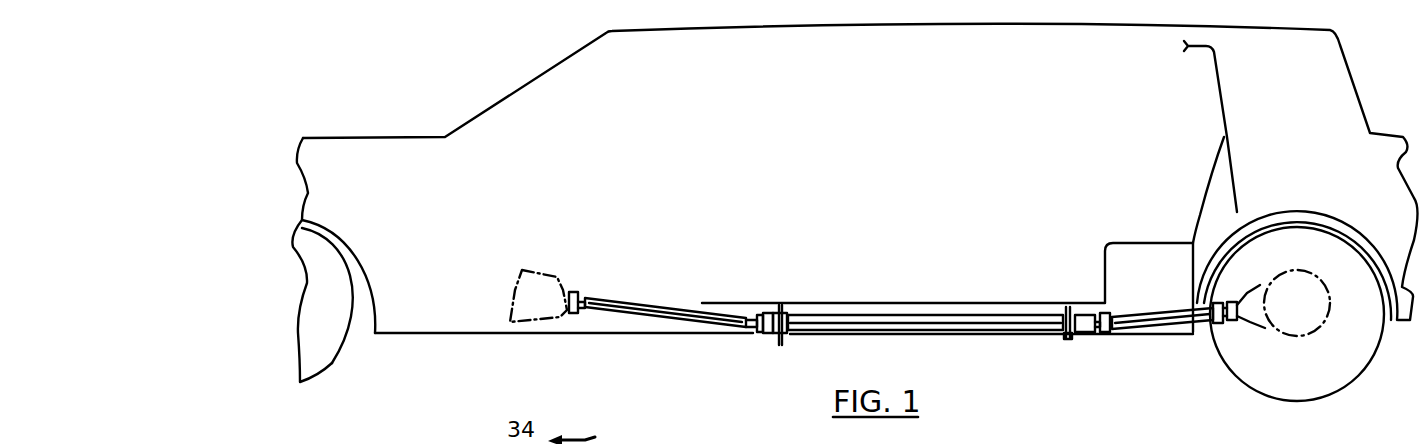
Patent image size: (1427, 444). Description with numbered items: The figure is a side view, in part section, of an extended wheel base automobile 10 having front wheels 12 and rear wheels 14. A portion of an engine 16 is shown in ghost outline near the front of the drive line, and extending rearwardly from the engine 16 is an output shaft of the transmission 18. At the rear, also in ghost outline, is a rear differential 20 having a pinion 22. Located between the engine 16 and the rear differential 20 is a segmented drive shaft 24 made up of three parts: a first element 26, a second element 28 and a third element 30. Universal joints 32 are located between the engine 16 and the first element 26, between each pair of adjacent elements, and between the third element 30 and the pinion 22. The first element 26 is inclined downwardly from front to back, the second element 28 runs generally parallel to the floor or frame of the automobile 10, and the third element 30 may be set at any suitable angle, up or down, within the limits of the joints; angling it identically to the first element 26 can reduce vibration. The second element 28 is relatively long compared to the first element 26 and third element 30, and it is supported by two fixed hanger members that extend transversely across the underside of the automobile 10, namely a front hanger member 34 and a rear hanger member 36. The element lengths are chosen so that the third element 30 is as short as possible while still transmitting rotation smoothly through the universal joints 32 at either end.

The automobile 10 is at (485, 90).
The front wheels 12 is at (333, 363).
The rear wheels 14 is at (1228, 376).
The engine 16 is at (547, 272).
The output shaft of the transmission 18 is at (571, 292).
The rear differential 20 is at (1297, 337).
The pinion 22 is at (1241, 300).
The segmented drive shaft 24 is at (680, 353).
The first element 26 is at (668, 300).
The second element 28 is at (912, 320).
The third element 30 is at (1170, 330).
The universal joints 32 is at (568, 316).
The front hanger member 34 is at (781, 336).
The rear hanger member 36 is at (1068, 340).